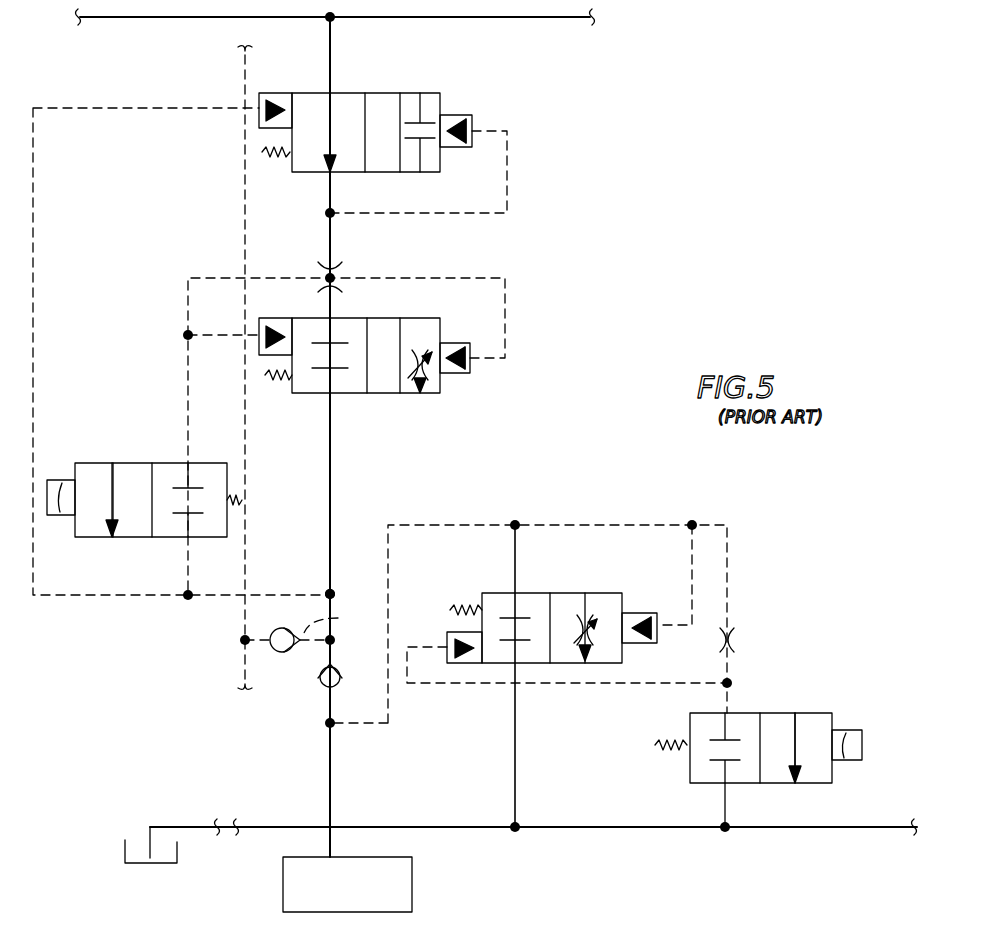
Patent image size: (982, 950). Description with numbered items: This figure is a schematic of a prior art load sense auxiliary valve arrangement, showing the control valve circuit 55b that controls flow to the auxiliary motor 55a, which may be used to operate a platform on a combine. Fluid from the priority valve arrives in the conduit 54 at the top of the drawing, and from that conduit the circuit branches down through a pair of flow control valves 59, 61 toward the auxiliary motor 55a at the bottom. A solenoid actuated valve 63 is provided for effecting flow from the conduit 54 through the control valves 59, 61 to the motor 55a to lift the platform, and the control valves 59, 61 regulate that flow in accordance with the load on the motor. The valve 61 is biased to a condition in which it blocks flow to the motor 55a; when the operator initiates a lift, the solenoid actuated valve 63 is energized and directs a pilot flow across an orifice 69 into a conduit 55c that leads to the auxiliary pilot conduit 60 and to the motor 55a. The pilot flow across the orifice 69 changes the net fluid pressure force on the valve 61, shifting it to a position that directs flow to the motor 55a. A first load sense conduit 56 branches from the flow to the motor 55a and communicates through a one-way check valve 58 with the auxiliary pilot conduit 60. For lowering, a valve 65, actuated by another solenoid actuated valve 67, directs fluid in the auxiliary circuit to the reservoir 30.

The reservoir 30 is at (128, 841).
The conduit 54 is at (535, 18).
The auxiliary motor 55a is at (411, 858).
The auxiliary control valve circuit 55b is at (622, 341).
The conduit 55c is at (332, 592).
The first load sense conduit 56 is at (335, 623).
The one-way check valve 58 is at (290, 651).
The flow control valve 59 is at (441, 93).
The auxiliary pilot conduit 60 is at (243, 411).
The flow control valve 61 is at (442, 329).
The solenoid actuated valve 63 is at (91, 462).
The valve 65 is at (634, 522).
The solenoid actuated valve 67 is at (810, 709).
The orifice 69 is at (318, 270).